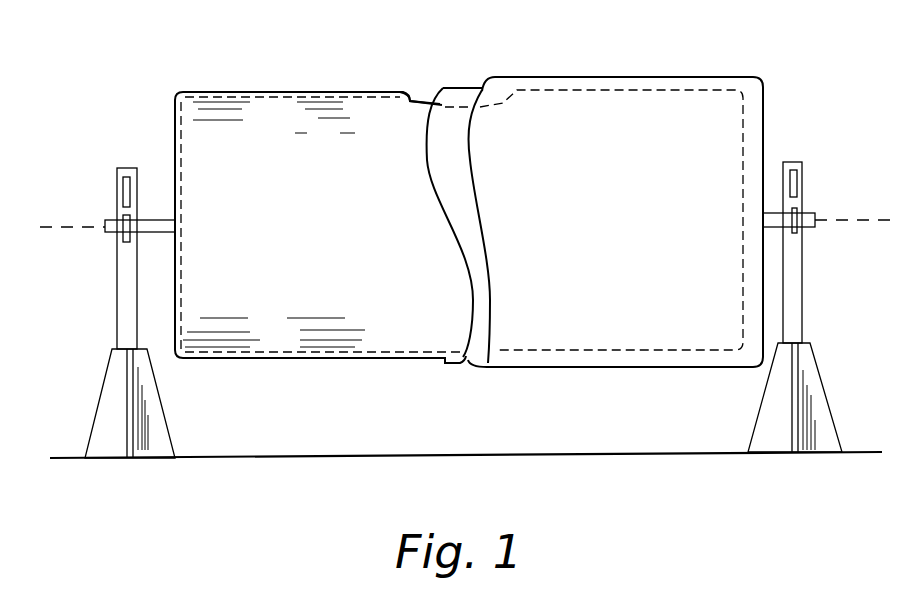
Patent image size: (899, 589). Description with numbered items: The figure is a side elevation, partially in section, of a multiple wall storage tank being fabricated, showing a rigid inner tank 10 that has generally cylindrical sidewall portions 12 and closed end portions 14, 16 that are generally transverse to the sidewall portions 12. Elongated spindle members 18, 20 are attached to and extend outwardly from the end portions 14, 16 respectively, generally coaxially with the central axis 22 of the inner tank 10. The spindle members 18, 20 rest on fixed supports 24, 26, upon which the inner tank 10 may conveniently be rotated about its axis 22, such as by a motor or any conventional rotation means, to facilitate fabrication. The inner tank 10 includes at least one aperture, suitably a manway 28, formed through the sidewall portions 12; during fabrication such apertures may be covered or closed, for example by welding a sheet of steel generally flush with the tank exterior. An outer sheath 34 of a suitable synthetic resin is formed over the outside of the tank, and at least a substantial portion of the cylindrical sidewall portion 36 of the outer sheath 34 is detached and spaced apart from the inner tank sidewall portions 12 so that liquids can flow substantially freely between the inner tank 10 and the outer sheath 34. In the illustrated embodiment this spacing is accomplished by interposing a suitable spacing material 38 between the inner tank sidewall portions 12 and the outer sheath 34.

The inner tank 10 is at (213, 85).
The sidewall portions 12 is at (213, 138).
The end portion 14 is at (175, 143).
The end portion 16 is at (743, 108).
The spindle member 18 is at (160, 231).
The spindle member 20 is at (768, 223).
The central axis 22 is at (885, 218).
The fixed support 24 is at (128, 313).
The fixed support 26 is at (800, 297).
The manway 28 is at (413, 100).
The outer sheath 34 is at (560, 77).
The cylindrical sidewall portion of outer sheath 36 is at (685, 107).
The spacing material 38 is at (458, 90).